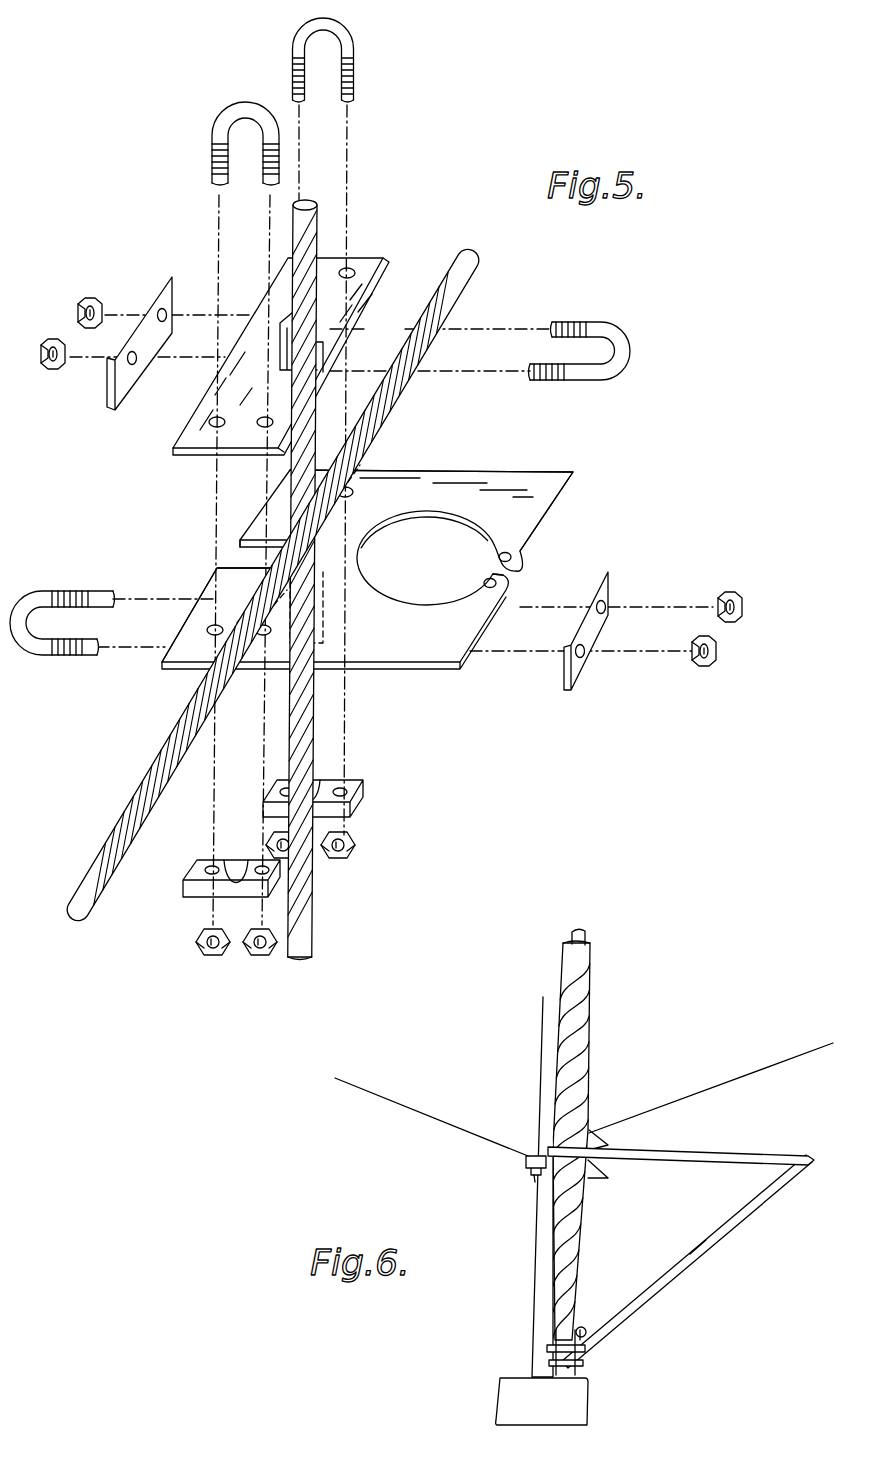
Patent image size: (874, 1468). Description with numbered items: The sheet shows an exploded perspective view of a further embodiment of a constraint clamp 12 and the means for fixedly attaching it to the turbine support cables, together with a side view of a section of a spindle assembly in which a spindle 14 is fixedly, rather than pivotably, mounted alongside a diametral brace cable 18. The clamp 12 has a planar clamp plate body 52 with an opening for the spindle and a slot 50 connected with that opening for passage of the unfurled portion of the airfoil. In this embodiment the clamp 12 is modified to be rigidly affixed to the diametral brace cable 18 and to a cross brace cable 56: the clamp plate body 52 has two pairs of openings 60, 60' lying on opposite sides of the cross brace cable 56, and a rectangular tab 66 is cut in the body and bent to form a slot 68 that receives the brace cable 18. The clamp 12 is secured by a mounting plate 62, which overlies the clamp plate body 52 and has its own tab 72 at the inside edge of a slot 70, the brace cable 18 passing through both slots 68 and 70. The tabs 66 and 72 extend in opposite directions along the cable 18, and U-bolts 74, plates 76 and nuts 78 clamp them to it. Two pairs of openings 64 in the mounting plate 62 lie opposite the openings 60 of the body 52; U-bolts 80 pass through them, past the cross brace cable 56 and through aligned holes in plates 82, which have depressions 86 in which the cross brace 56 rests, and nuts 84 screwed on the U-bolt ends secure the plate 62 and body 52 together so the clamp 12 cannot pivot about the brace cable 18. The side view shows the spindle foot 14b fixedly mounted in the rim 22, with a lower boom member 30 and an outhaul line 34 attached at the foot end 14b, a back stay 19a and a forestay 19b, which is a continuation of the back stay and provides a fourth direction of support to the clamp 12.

In FIG. 5, the constraint clamp 12 is at (600, 463).
In FIG. 6, the constraint clamp 12 is at (524, 1163).
In FIG. 6, the spindle 14 is at (590, 943).
In FIG. 6, the foot end of spindle 14b is at (572, 1375).
In FIG. 5, the diametral brace cable 18 is at (318, 218).
In FIG. 6, the diametral brace cable 18 is at (546, 1258).
In FIG. 6, the back stay 19a is at (425, 1118).
In FIG. 6, the forestay 19b is at (712, 1085).
In FIG. 6, the rim 22 is at (575, 1402).
In FIG. 6, the lower boom member 30 is at (645, 1305).
In FIG. 6, the outhaul line 34 is at (668, 1268).
In FIG. 5, the slot 50 is at (516, 578).
In FIG. 5, the clamp plate body 52 is at (510, 492).
In FIG. 5, the cross brace cable 56 is at (474, 282).
In FIG. 6, the cross brace cable 56 is at (530, 1178).
In FIG. 5, the openings 60 is at (239, 669).
In FIG. 5, the openings 60' is at (364, 461).
In FIG. 5, the mounting plate 62 is at (386, 272).
In FIG. 5, the openings 64 is at (347, 270).
In FIG. 5, the tab 66 is at (322, 598).
In FIG. 5, the slot 68 is at (232, 555).
In FIG. 5, the slot 70 is at (345, 358).
In FIG. 5, the tab 72 is at (283, 325).
In FIG. 5, the U-bolts 74 is at (613, 322).
In FIG. 5, the plates 76 is at (163, 283).
In FIG. 5, the nuts 78 is at (46, 345).
In FIG. 5, the U-bolts 80 is at (240, 105).
In FIG. 5, the plates 82 is at (362, 793).
In FIG. 5, the nuts 84 is at (256, 957).
In FIG. 5, the depressions 86 is at (327, 783).